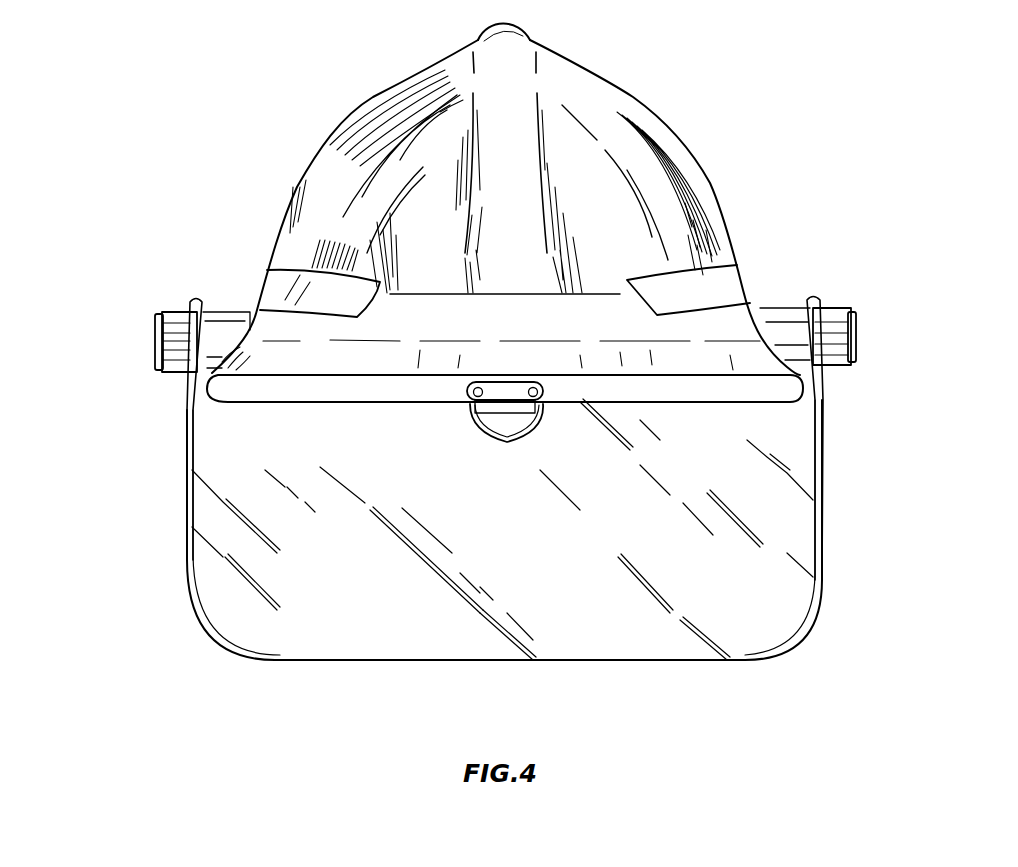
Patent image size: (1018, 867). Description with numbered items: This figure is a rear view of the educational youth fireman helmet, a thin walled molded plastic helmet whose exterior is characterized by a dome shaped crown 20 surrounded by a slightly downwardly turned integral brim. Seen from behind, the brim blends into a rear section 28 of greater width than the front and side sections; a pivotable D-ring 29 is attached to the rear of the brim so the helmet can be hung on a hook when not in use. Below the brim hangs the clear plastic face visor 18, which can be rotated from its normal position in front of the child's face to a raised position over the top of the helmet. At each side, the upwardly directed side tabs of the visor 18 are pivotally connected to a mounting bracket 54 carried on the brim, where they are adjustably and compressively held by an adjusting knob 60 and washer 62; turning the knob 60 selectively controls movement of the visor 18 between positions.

The face visor 18 is at (822, 508).
The crown 20 is at (668, 180).
The rear section 28 is at (258, 371).
The D-ring bracket 29 is at (500, 405).
The mounting bracket 54 is at (777, 308).
The adjusting knob 60 is at (858, 343).
The washer 62 is at (818, 298).